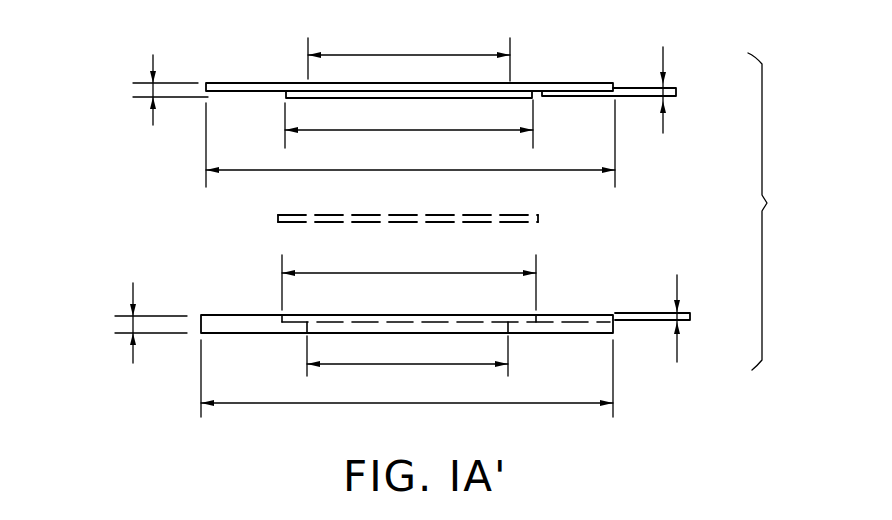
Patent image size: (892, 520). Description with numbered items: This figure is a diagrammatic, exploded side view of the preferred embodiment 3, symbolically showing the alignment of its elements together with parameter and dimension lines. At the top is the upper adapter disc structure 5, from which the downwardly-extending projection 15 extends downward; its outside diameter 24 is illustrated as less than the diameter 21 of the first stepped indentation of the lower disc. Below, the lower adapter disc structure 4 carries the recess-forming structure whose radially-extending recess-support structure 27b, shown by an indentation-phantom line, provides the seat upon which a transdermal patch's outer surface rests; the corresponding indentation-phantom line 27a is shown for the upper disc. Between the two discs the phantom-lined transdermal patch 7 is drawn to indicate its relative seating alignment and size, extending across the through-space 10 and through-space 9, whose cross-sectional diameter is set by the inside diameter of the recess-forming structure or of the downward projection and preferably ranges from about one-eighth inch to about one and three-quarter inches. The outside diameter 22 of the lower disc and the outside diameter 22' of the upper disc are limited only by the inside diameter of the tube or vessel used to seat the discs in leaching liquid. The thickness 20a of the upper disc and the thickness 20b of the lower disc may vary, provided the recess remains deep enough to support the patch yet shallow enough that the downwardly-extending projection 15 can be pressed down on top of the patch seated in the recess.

The preferred embodiment 3 is at (772, 206).
The lower adapter disc structure 4 is at (617, 331).
The upper adapter disc structure 5 is at (617, 82).
The transdermal patch 7 is at (540, 216).
The through-space 9 is at (410, 337).
The through-space 10 is at (477, 83).
The downwardly-extending projection 15 is at (524, 100).
The thickness of adapter disc structure 20a is at (145, 88).
The thickness of adapter disc structure 20b is at (122, 321).
The diameter of first stepped indentation 21 is at (492, 275).
The outside diameter of adapter disc structures 22 is at (407, 378).
The outside diameter of adapter disc structure 22' is at (410, 143).
The outside diameter of downwardly-extending projection 24 is at (428, 138).
The indentation-phantom line 27a is at (677, 92).
The recess-support structure 27b is at (692, 316).